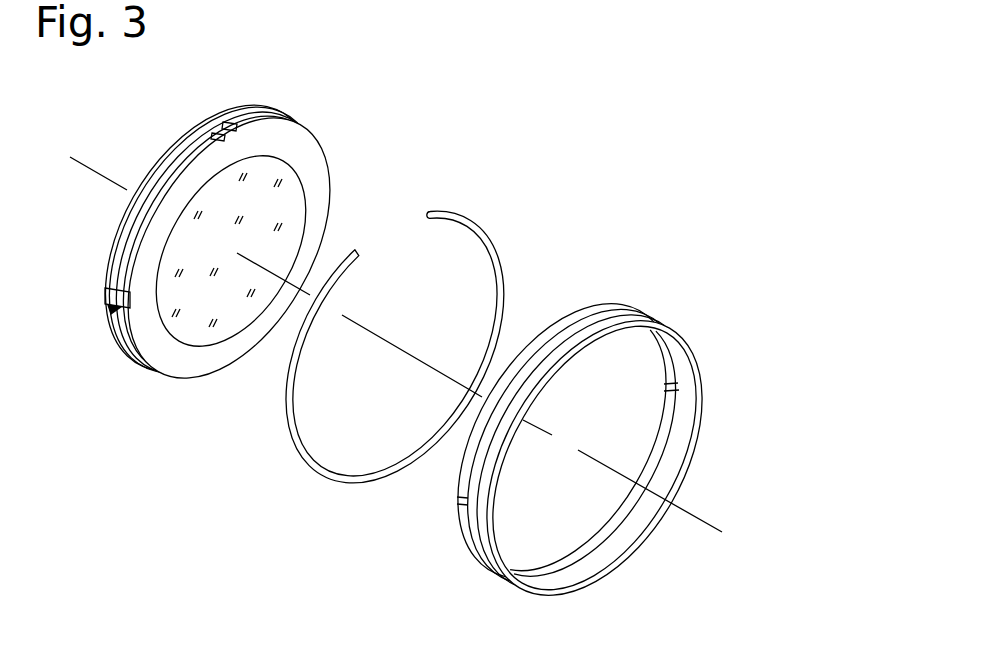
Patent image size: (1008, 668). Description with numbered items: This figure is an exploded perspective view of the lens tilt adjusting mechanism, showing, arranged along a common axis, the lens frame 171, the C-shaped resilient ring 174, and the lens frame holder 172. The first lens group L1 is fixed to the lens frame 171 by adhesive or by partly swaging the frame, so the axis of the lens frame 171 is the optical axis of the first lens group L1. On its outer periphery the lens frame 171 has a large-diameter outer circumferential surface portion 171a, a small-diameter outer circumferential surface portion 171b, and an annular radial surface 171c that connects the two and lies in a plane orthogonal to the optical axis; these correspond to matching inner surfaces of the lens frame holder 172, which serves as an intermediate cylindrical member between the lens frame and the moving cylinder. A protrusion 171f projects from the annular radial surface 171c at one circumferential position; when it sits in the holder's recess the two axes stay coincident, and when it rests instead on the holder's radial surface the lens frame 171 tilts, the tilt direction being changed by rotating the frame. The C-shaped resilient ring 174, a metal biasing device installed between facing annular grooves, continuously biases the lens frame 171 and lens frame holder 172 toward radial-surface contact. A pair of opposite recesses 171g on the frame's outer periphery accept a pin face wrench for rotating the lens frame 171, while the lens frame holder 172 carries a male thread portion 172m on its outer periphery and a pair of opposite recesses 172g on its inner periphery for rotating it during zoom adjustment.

The lens frame 171 is at (302, 150).
The large-diameter outer circumferential surface portion 171a is at (173, 183).
The small-diameter outer circumferential surface portion 171b is at (131, 233).
The annular radial surface 171c is at (125, 275).
The protrusion 171f is at (220, 137).
The recesses 171g is at (329, 197).
The first lens group L1 is at (239, 313).
The C-shaped resilient ring 174 is at (492, 235).
The lens frame holder 172 is at (700, 358).
The male thread portion 172m is at (627, 303).
The recesses 172g is at (673, 387).